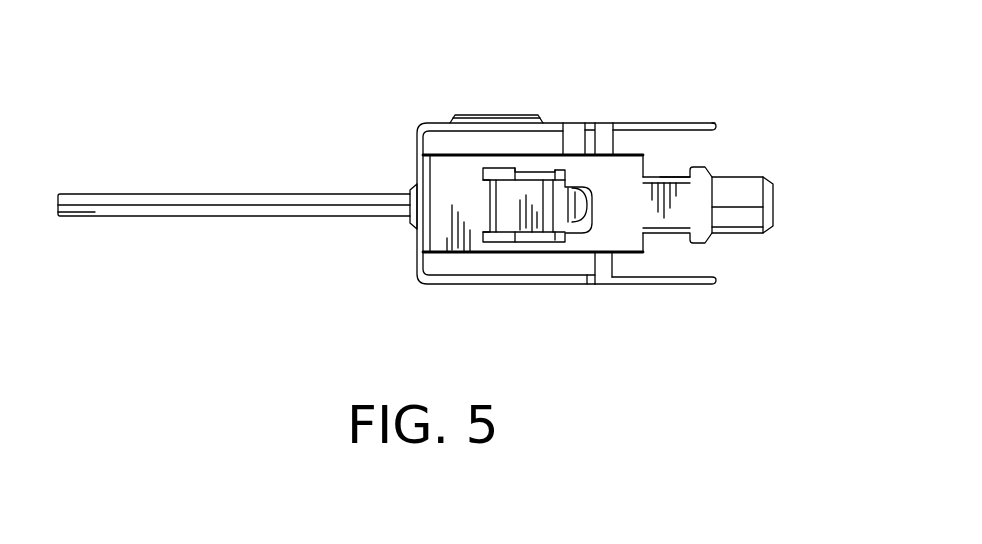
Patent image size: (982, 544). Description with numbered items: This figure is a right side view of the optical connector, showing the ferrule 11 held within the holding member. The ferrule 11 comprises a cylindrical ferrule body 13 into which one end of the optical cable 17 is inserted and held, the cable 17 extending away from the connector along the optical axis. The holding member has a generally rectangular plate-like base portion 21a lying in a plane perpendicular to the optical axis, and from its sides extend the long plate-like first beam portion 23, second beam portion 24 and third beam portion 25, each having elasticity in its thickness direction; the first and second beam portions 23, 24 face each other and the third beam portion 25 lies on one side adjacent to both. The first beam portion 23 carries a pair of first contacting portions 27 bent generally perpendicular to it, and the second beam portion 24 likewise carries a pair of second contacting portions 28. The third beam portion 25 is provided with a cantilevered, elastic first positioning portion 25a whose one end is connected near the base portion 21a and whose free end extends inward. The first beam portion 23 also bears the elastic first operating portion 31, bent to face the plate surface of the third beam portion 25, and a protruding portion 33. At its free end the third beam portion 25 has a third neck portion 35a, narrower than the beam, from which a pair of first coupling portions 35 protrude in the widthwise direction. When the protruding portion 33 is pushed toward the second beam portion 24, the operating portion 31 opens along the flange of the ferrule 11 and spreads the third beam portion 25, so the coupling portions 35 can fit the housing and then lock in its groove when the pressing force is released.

The ferrule 11 is at (777, 200).
The ferrule body 13 is at (410, 228).
The optical cable 17 is at (250, 195).
The base portion 21a is at (417, 150).
The first beam portion 23 is at (660, 124).
The second beam portion 24 is at (662, 282).
The third beam portion 25 is at (475, 243).
The first positioning portion 25a is at (517, 213).
The first contacting portions 27 is at (607, 135).
The second contacting portions 28 is at (600, 268).
The first operating portion 31 is at (573, 140).
The protruding portion 33 is at (492, 115).
The first coupling portions 35 is at (708, 170).
The third neck portion 35a is at (673, 182).